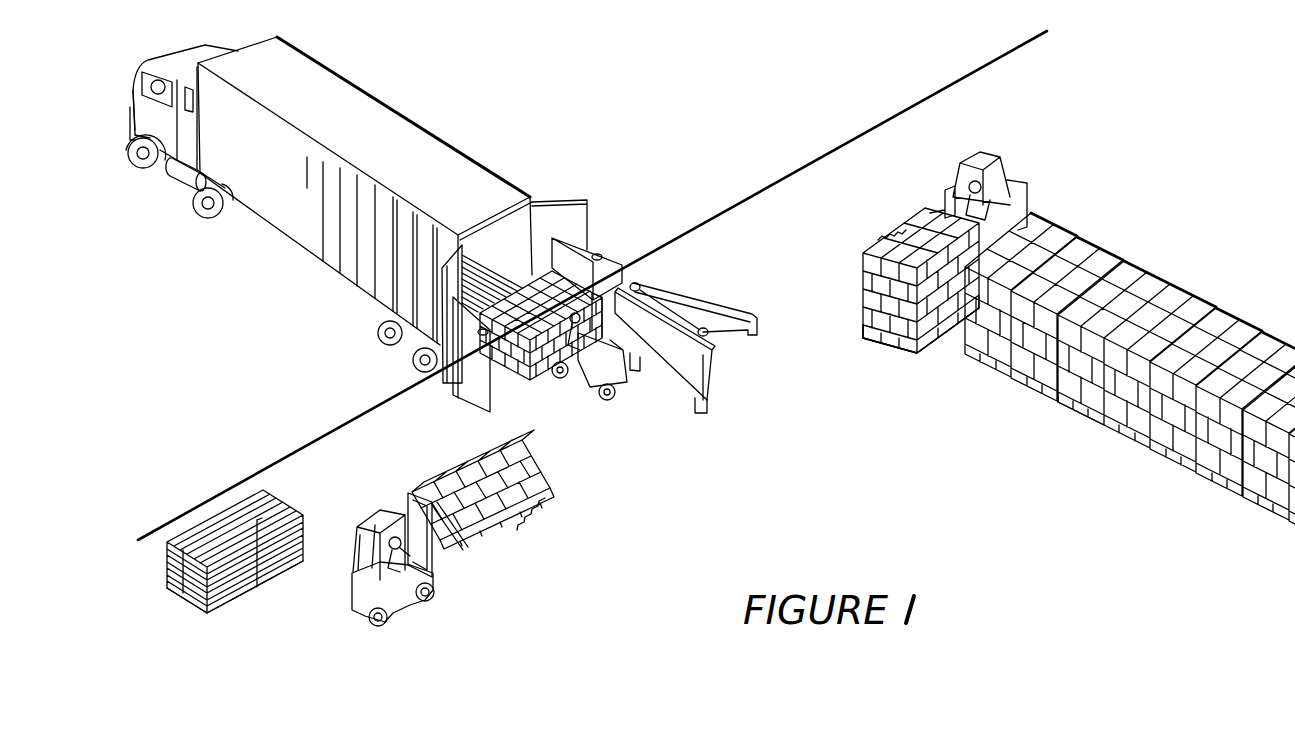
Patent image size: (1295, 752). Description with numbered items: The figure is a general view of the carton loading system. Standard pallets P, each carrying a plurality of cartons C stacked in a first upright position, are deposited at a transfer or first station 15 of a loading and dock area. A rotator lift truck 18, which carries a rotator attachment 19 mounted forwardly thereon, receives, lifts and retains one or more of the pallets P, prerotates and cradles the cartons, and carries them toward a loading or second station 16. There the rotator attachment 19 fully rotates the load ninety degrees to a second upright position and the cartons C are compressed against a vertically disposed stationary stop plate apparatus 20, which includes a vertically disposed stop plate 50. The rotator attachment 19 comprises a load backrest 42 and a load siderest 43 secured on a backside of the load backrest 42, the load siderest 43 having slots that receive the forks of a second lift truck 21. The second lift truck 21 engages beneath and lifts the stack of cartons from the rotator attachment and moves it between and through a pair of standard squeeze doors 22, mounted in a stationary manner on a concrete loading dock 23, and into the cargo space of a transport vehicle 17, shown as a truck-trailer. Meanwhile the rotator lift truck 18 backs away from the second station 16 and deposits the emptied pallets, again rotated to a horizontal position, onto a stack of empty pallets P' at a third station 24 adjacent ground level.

The first station 15 is at (1058, 154).
The second station 16 is at (714, 261).
The transport vehicle 17 is at (456, 112).
The rotator lift truck 18 is at (399, 624).
The rotator attachment 19 is at (532, 517).
The stop plate apparatus 20 is at (731, 384).
The second lift truck 21 is at (588, 396).
The squeeze doors 22 is at (605, 253).
The loading dock 23 is at (656, 439).
The third station 24 is at (232, 481).
The load backrest 42 is at (455, 540).
The load siderest 43 is at (493, 535).
The stop plate 50 is at (688, 355).
The cartons C is at (552, 478).
The pallets P is at (987, 388).
The stack of empty pallets P' is at (235, 627).